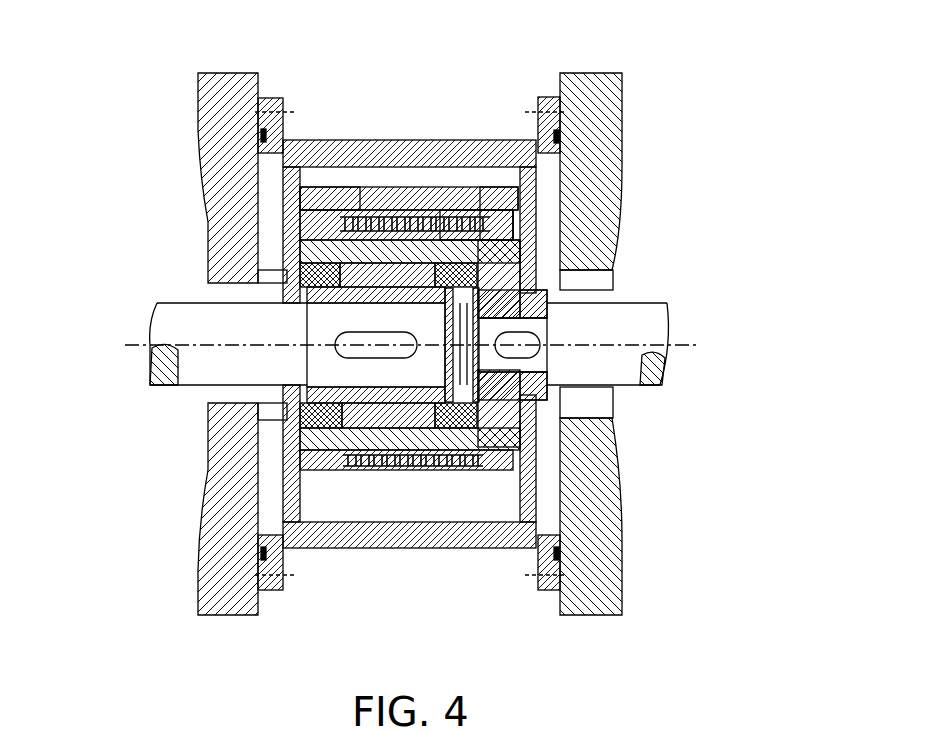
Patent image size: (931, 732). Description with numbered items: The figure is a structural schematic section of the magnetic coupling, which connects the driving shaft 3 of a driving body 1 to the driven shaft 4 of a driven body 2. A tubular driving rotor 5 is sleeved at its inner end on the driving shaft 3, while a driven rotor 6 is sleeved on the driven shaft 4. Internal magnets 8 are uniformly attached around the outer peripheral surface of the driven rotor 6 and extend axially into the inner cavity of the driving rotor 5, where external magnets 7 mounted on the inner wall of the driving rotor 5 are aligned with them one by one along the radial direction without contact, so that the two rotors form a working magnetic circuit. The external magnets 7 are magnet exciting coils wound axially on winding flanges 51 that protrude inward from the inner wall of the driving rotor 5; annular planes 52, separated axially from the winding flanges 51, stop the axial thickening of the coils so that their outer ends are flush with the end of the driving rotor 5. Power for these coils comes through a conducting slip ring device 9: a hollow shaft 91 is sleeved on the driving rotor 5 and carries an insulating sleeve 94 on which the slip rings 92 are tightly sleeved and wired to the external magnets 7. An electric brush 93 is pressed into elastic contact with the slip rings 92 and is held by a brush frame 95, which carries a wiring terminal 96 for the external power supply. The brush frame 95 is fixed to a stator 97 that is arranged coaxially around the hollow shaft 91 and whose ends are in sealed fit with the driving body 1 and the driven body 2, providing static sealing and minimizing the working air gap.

The driving body 1 is at (587, 473).
The driven body 2 is at (233, 232).
The driving shaft 3 is at (633, 328).
The driven shaft 4 is at (217, 325).
The driving rotor 5 is at (498, 405).
The driven rotor 6 is at (330, 383).
The external magnets 7 is at (200, 566).
The internal magnets 8 is at (386, 452).
The conducting slip ring device 9 is at (385, 167).
The winding flanges 51 is at (307, 320).
The annular planes 52 is at (470, 297).
The hollow shaft 91 is at (515, 228).
The slip rings 92 is at (467, 208).
The electric brush 93 is at (428, 215).
The insulating sleeve 94 is at (513, 218).
The brush frame 95 is at (333, 190).
The wiring terminal 96 is at (363, 185).
The stator 97 is at (258, 110).